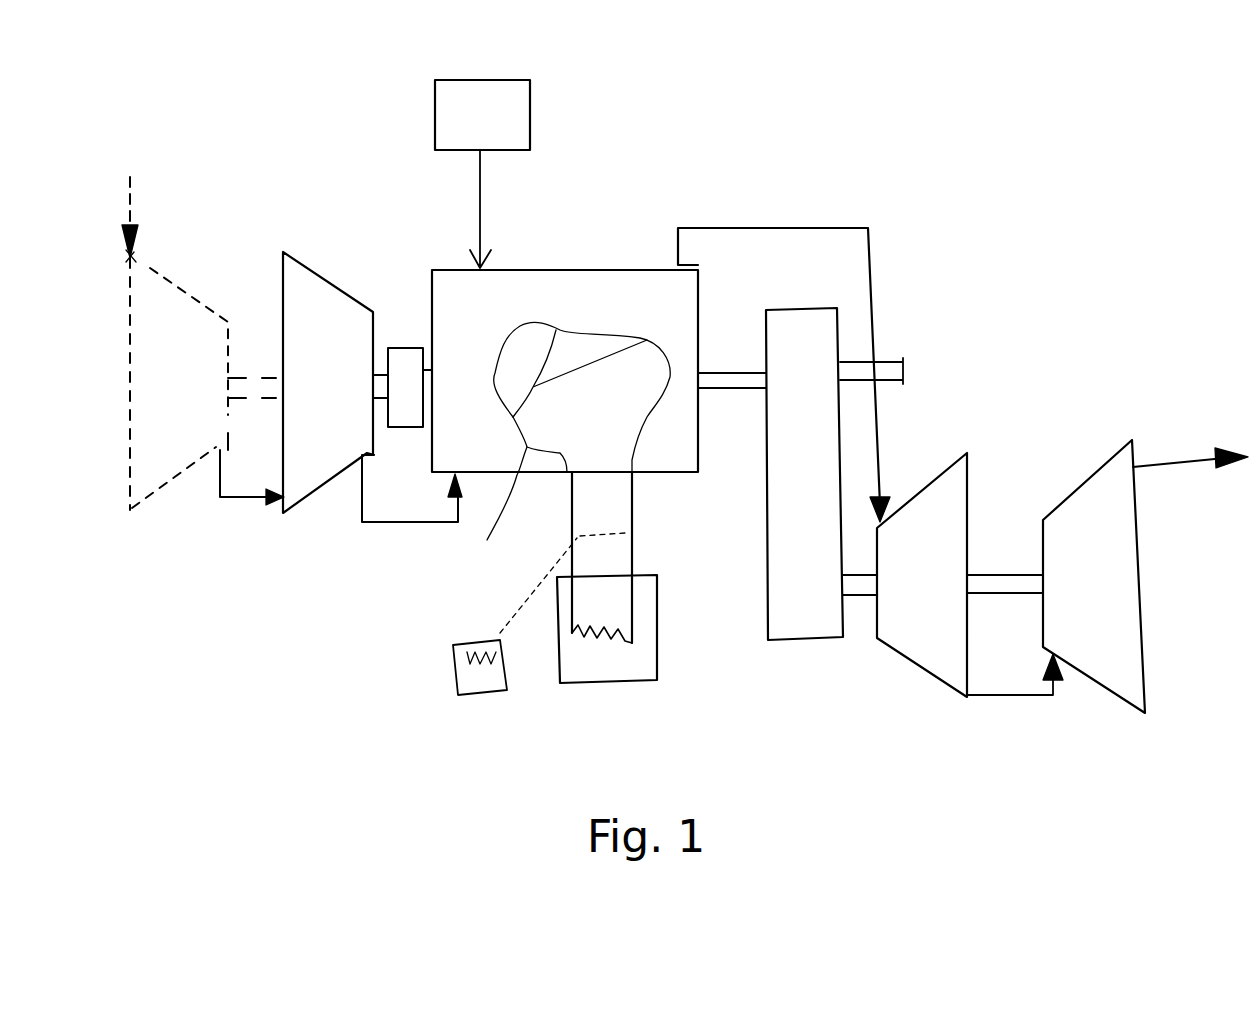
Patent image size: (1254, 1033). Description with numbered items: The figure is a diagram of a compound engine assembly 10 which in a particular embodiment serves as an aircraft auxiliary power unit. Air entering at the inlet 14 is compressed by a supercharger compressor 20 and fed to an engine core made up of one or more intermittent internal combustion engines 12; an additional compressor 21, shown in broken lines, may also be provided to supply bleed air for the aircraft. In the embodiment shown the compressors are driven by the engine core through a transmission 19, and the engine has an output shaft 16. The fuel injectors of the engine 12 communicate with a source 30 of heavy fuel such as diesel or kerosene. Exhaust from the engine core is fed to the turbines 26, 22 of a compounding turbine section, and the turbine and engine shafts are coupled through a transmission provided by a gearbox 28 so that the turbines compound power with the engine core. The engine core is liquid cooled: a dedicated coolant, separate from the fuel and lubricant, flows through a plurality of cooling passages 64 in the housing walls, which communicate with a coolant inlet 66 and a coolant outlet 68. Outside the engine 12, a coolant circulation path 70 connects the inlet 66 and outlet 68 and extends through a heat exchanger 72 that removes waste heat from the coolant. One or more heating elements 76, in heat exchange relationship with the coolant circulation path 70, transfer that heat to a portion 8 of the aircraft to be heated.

The compound engine assembly 10 is at (1062, 121).
The air inlet 14 is at (128, 197).
The additional compressor 21 is at (160, 300).
The supercharger compressor 20 is at (319, 480).
The transmission 19 is at (400, 348).
The source of heavy fuel 30 is at (515, 107).
The intermittent internal combustion engine 12 is at (600, 305).
The output shaft 16 is at (725, 373).
The gearbox 28 is at (822, 380).
The turbine 26 is at (950, 503).
The turbine 22 is at (1107, 660).
The coolant circulation path 70 is at (633, 552).
The heat exchanger 72 is at (658, 658).
The heating element 76 is at (455, 660).
The portion of the aircraft to be heated 8 is at (481, 649).
The cooling passages 64 is at (493, 521).
The coolant inlet 66 is at (568, 473).
The coolant outlet 68 is at (630, 472).